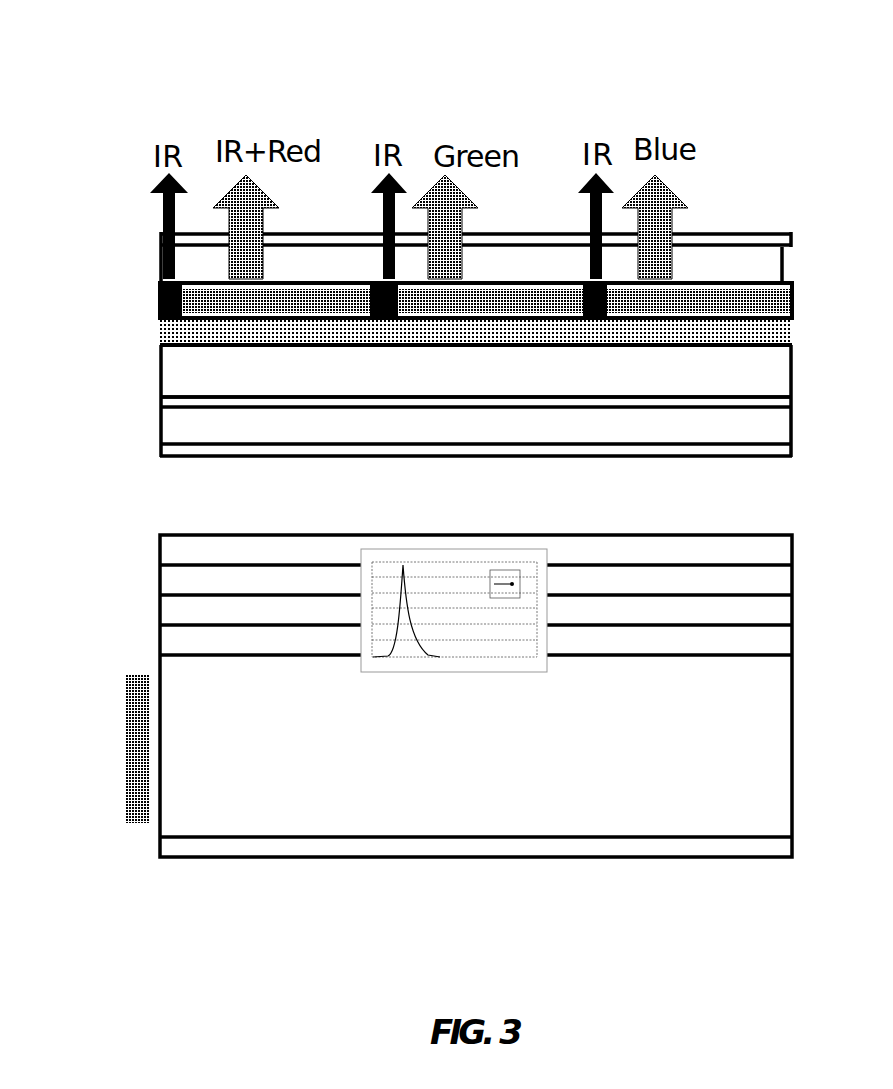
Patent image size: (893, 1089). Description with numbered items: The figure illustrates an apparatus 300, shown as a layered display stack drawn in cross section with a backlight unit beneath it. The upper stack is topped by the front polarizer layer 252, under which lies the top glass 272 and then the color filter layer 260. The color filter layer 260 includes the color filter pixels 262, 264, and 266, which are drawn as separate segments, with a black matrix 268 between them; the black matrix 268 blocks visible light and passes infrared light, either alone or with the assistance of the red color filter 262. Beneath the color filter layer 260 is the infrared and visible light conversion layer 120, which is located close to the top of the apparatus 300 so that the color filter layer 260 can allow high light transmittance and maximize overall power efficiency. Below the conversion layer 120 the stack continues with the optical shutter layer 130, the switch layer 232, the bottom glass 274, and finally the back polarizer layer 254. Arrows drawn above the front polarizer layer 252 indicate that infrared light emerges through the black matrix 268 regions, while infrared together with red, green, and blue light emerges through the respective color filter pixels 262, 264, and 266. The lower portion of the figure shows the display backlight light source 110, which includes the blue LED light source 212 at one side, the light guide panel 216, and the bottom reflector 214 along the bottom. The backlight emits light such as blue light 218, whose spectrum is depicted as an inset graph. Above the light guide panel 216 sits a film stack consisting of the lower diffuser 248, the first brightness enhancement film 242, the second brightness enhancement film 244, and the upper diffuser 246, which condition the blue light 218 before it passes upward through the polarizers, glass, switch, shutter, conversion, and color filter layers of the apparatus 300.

The apparatus 300 is at (780, 79).
The front polarizer layer 252 is at (159, 232).
The top glass 272 is at (159, 255).
The color filter layer 260 is at (159, 292).
The black matrix 268 is at (172, 282).
The color filter pixel 262 is at (285, 283).
The color filter pixel 264 is at (491, 283).
The color filter pixel 266 is at (704, 283).
The infrared and visible light conversion layer 120 is at (159, 324).
The optical shutter layer 130 is at (159, 367).
The switch layer 232 is at (159, 398).
The bottom glass 274 is at (159, 422).
The back polarizer layer 254 is at (159, 440).
The upper diffuser 246 is at (159, 540).
The second brightness enhancement film 244 is at (159, 570).
The first brightness enhancement film 242 is at (159, 600).
The lower diffuser 248 is at (159, 633).
The blue light 218 is at (358, 643).
The blue LED light source 212 is at (125, 698).
The display backlight light source 110 is at (101, 752).
The bottom reflector 214 is at (159, 843).
The light guide panel 216 is at (795, 717).